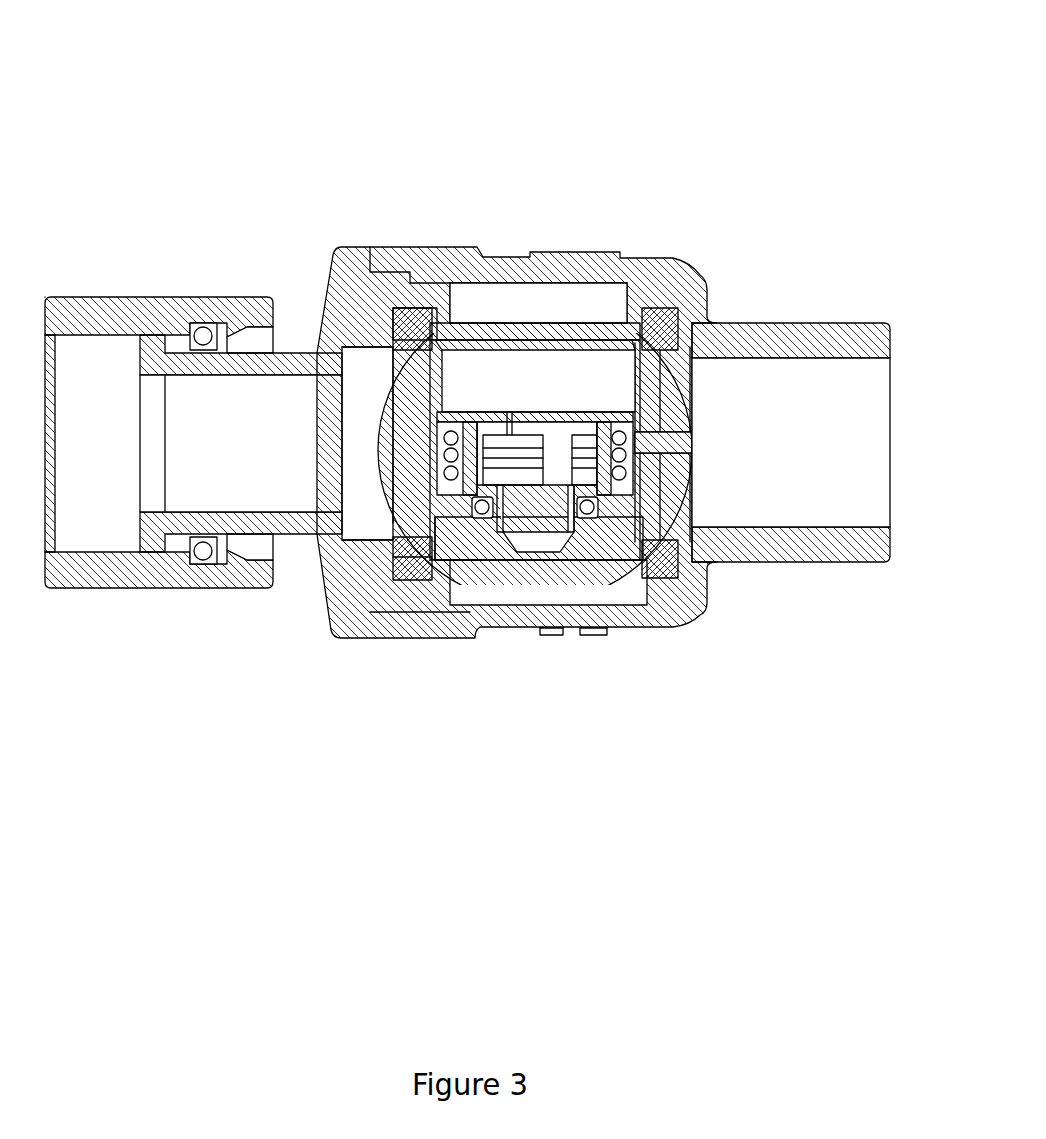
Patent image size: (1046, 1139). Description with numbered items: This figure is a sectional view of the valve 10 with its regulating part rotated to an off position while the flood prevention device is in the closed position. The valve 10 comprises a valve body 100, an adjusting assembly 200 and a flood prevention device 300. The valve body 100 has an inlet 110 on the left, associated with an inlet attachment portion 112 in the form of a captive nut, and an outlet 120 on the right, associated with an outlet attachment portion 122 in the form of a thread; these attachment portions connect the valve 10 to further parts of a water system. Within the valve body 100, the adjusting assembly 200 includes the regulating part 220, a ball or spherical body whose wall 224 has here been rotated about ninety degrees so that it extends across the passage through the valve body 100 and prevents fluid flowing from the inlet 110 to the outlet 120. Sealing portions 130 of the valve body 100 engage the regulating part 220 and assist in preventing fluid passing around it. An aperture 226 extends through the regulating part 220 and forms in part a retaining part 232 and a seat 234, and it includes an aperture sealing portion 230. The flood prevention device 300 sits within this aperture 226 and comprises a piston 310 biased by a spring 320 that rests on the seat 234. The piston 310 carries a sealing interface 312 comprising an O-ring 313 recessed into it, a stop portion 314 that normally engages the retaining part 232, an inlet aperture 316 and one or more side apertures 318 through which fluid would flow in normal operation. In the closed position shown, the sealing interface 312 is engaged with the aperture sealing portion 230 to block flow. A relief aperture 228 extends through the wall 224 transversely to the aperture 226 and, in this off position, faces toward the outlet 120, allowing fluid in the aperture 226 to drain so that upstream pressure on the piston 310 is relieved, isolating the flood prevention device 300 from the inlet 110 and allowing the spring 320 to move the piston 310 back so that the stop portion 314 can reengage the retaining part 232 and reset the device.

The valve 10 is at (769, 67).
The valve body 100 is at (247, 176).
The inlet 110 is at (48, 468).
The inlet attachment portion 112 is at (122, 297).
The outlet 120 is at (883, 453).
The outlet attachment portion 122 is at (847, 323).
The sealing portions 130 is at (428, 310).
The adjusting assembly 200 is at (766, 737).
The regulating part 220 is at (665, 572).
The wall 224 is at (676, 478).
The aperture 226 is at (532, 355).
The relief aperture 228 is at (683, 443).
The aperture sealing portion 230 is at (600, 470).
The retaining part 232 is at (442, 350).
The seat 234 is at (422, 558).
The flood prevention device 300 is at (516, 799).
The piston 310 is at (562, 600).
The sealing interface 312 is at (452, 517).
The O-ring 313 is at (593, 517).
The stop portion 314 is at (452, 470).
The inlet aperture 316 is at (512, 430).
The side apertures 318 is at (618, 458).
The spring 320 is at (643, 440).